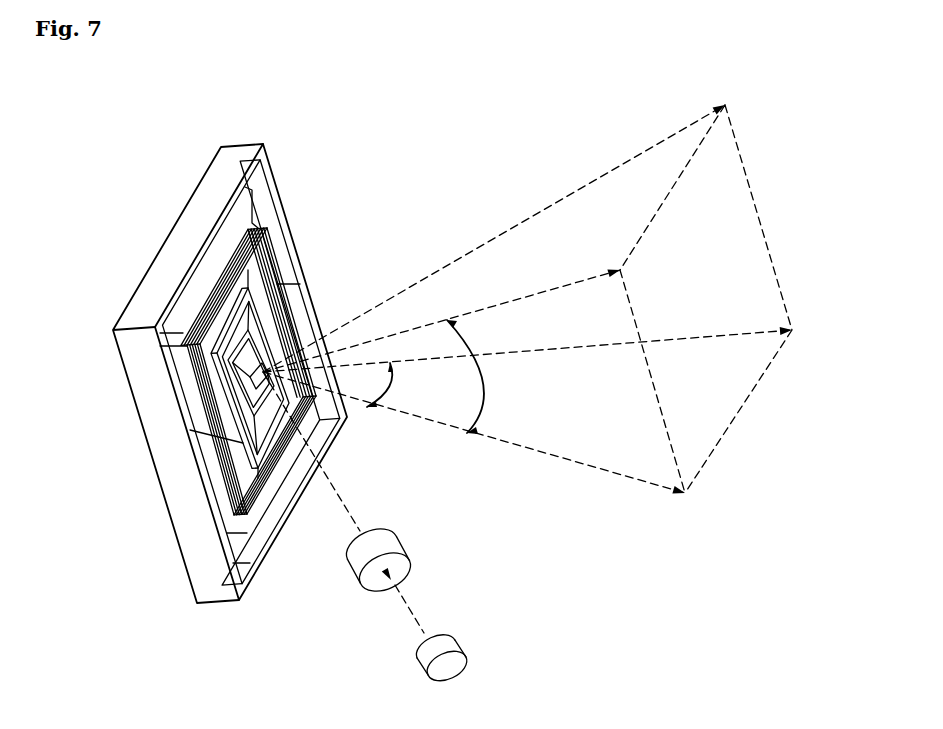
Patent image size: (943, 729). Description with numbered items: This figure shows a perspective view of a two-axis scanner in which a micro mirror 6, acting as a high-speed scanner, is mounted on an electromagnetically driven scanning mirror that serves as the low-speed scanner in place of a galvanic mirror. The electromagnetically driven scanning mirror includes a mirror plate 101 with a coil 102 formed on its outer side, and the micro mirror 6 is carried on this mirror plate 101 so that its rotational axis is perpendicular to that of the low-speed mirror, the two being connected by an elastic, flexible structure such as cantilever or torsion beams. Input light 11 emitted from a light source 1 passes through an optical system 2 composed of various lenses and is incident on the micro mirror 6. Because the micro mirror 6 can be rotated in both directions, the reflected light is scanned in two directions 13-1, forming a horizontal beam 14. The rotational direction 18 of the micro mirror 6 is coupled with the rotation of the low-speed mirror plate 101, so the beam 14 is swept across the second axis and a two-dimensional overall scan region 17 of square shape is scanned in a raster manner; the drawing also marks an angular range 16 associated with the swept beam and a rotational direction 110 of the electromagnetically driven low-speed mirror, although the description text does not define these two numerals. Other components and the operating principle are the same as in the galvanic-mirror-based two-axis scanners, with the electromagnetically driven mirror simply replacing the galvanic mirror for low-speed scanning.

The light source 1 is at (418, 654).
The optical system 2 is at (357, 558).
The micro mirror 6 is at (178, 324).
The input light 11 is at (412, 618).
The two scanning directions 13-1 is at (406, 385).
The horizontal beam 14 is at (538, 438).
The scanning angle 16 is at (483, 377).
The overall scan region 17 is at (722, 217).
The rotational direction of the micro mirror 18 is at (142, 196).
The mirror plate 101 is at (247, 226).
The coil 102 is at (298, 248).
The mirror 110 is at (108, 462).